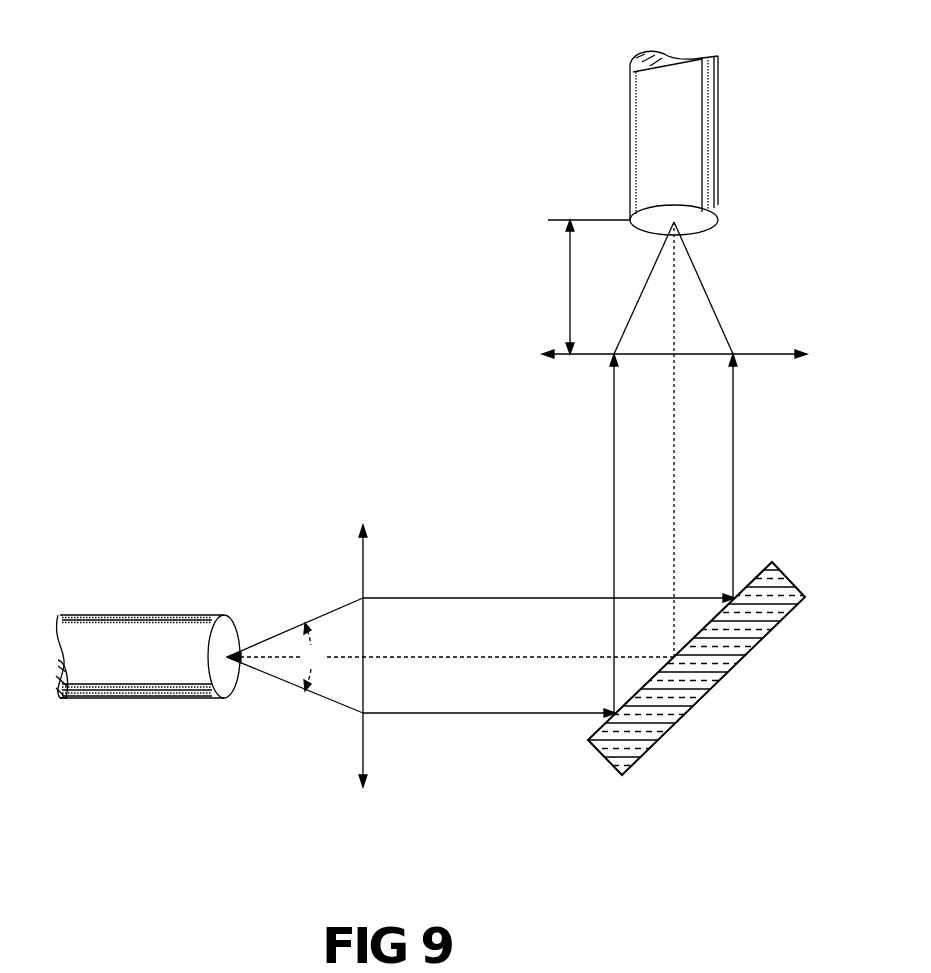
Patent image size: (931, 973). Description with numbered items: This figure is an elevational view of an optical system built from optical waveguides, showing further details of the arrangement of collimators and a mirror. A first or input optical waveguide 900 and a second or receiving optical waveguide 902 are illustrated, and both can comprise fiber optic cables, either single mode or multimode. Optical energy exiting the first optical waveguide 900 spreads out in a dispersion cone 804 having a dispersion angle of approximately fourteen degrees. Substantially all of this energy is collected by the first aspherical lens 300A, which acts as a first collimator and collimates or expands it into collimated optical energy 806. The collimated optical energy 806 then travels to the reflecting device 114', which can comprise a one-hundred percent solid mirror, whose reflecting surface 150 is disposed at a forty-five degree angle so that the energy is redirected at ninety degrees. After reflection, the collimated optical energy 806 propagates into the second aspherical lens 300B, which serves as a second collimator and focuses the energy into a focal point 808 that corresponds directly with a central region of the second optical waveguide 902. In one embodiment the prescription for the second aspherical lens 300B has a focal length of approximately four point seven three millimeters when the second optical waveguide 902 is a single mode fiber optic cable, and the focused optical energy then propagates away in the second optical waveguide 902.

The second optical waveguide 902 is at (720, 80).
The focal point 808 is at (687, 230).
The second aspherical lens 300B is at (582, 356).
The collimated optical energy 806 is at (733, 478).
The reflecting surface 150 is at (710, 618).
The first aspherical lens 300A is at (443, 540).
The dispersion cone 804 is at (328, 607).
The first optical waveguide 900 is at (177, 613).
The reflecting device 114' is at (695, 687).